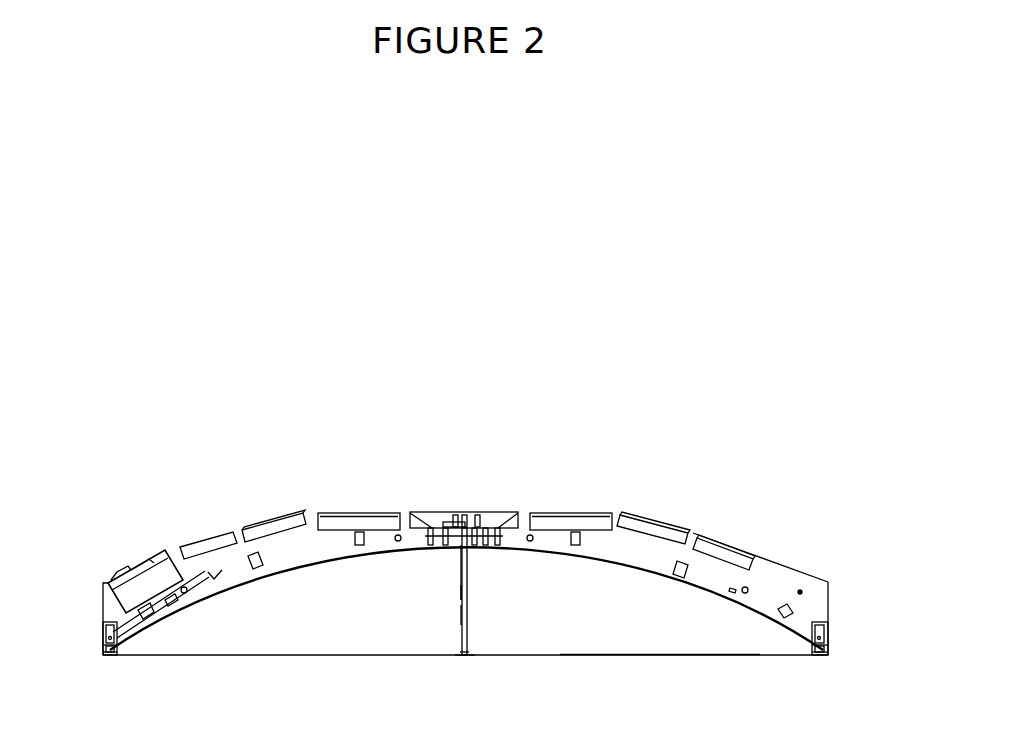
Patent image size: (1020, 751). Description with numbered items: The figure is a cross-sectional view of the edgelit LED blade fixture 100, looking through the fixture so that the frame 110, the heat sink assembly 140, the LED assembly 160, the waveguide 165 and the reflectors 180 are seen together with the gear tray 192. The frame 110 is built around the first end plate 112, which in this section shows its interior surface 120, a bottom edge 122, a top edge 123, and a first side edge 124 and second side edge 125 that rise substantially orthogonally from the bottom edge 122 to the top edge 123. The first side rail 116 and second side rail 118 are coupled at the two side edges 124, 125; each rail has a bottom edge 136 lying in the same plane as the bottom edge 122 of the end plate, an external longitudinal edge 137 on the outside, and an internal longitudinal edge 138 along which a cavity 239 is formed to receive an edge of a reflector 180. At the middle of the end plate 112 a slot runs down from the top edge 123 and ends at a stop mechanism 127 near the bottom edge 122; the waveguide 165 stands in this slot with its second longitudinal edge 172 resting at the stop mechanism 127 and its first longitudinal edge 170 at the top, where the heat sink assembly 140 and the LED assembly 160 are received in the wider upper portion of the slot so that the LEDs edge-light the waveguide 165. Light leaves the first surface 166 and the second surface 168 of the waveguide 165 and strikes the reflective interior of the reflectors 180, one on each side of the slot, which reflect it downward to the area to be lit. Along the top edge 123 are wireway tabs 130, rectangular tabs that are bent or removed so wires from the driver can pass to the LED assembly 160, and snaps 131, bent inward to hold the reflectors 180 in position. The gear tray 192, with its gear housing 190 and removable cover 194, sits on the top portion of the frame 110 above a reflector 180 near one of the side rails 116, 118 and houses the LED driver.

The edgelit LED blade fixture 100 is at (640, 412).
The frame 110 is at (768, 548).
The first end plate 112 is at (644, 650).
The first side rail 116 is at (100, 637).
The second side rail 118 is at (830, 637).
The interior surface 120 is at (698, 642).
The bottom edge 122 is at (556, 658).
The top edge 123 is at (614, 515).
The first side edge 124 is at (100, 588).
The second side edge 125 is at (830, 605).
The stop mechanism 127 is at (463, 658).
The wireway tab 130 is at (366, 523).
The snap 131 is at (575, 540).
The bottom edge 136 is at (100, 657).
The external longitudinal edge 137 is at (833, 648).
The internal longitudinal edge 138 is at (820, 648).
The heat sink assembly 140 is at (481, 529).
The LED assembly 160 is at (448, 570).
The waveguide 165 is at (460, 612).
The first surface 166 is at (458, 590).
The second surface 168 is at (472, 605).
The first longitudinal edge 170 is at (470, 528).
The second longitudinal edge 172 is at (458, 653).
The reflector 180 is at (312, 562).
The gear housing 190 is at (158, 562).
The gear tray 192 is at (180, 610).
The removable cover 194 is at (132, 563).
The cavity 239 is at (98, 645).